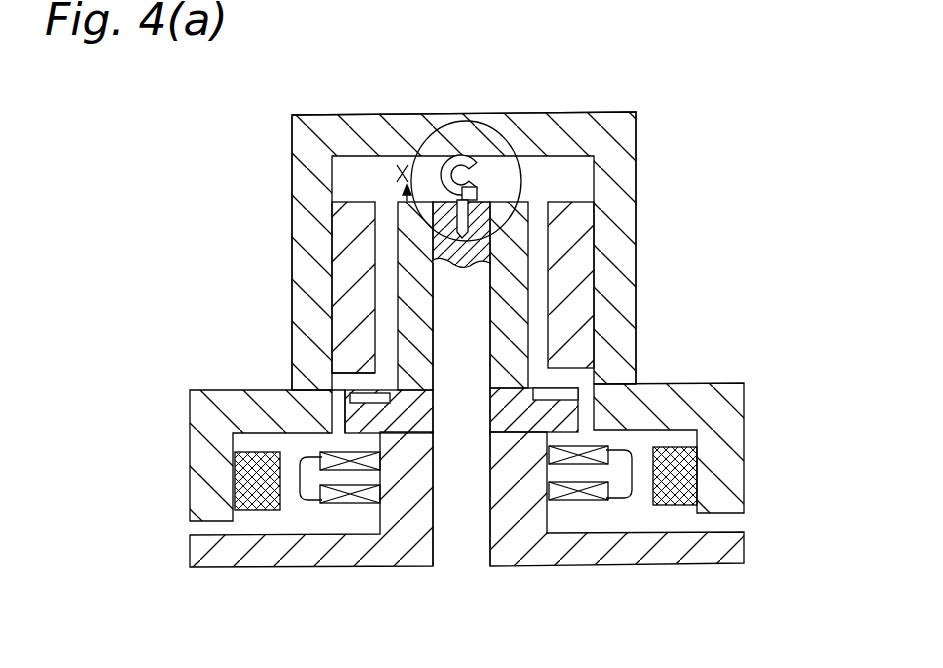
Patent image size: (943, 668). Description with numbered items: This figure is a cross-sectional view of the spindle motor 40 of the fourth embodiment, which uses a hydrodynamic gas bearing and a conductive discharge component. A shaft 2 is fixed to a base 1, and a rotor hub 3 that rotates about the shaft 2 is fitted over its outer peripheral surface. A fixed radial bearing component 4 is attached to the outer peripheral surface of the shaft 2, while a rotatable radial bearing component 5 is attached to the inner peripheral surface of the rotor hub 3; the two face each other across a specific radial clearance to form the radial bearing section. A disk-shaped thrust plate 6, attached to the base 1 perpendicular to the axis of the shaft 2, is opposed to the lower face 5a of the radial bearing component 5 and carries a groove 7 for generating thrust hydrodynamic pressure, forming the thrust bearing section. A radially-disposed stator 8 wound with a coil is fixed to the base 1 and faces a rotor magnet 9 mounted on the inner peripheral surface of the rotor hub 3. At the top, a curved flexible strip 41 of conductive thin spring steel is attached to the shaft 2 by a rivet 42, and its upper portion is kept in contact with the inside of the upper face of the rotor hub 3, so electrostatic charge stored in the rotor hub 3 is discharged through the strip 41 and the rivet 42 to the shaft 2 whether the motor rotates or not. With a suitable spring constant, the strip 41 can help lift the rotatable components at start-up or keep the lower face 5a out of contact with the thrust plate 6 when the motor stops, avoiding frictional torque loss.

The base 1 is at (398, 541).
The shaft 2 is at (460, 537).
The rotor hub 3 is at (310, 168).
The radial bearing component 4 is at (522, 250).
The rotatable radial bearing component 5 is at (348, 277).
The lower face 5a is at (328, 397).
The thrust plate 6 is at (558, 417).
The groove 7 is at (555, 393).
The stator 8 is at (618, 477).
The rotor magnet 9 is at (697, 467).
The spindle motor 40 is at (653, 135).
The curved flexible strip 41 is at (411, 155).
The rivet 42 is at (481, 158).